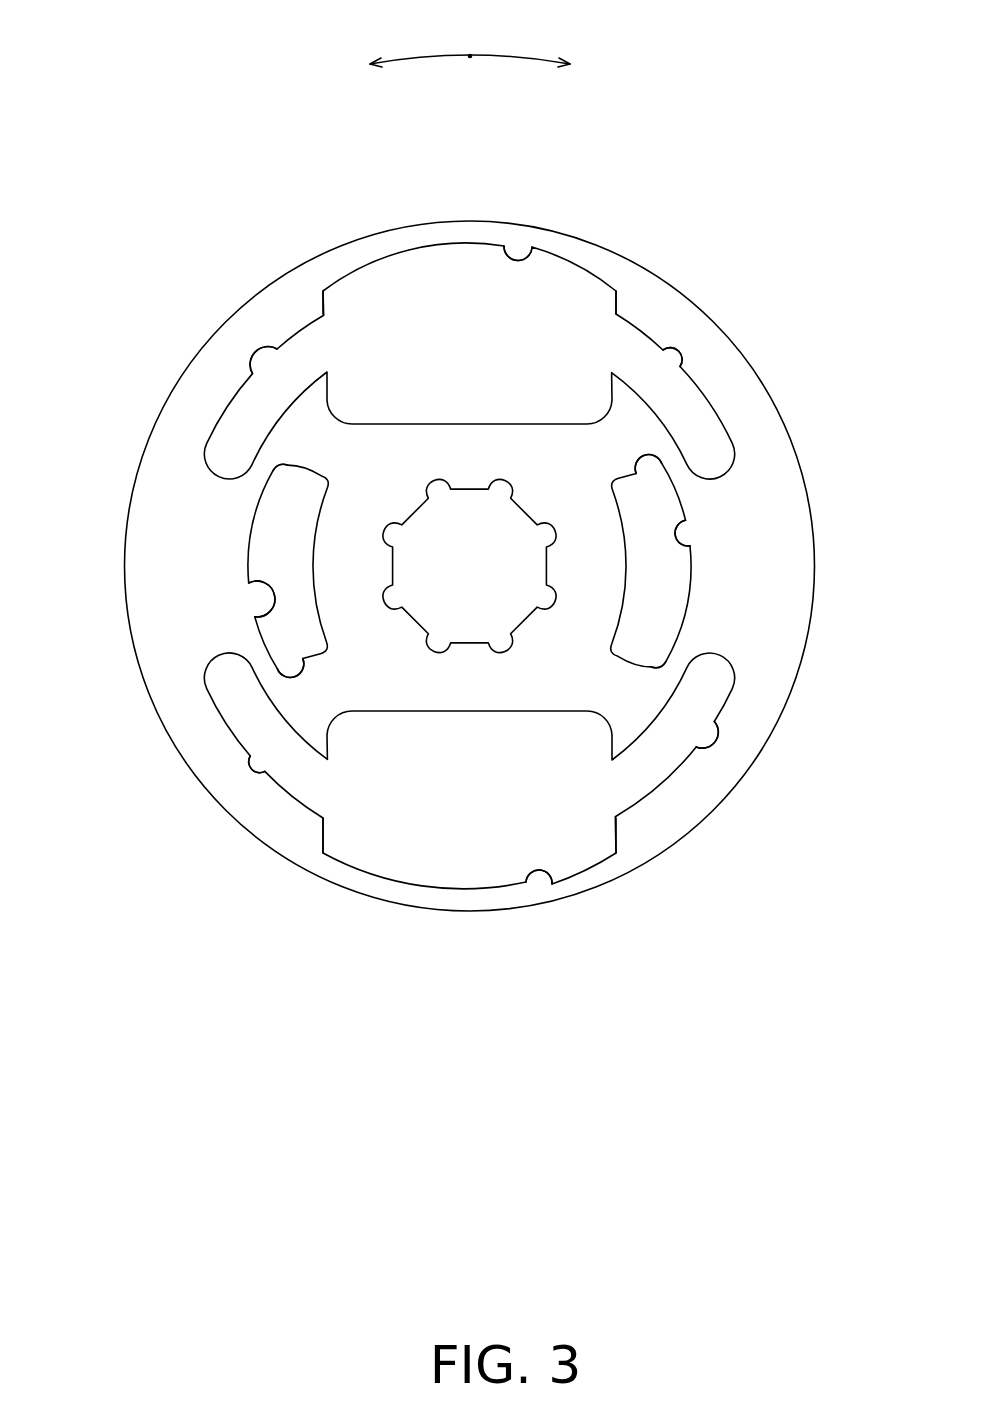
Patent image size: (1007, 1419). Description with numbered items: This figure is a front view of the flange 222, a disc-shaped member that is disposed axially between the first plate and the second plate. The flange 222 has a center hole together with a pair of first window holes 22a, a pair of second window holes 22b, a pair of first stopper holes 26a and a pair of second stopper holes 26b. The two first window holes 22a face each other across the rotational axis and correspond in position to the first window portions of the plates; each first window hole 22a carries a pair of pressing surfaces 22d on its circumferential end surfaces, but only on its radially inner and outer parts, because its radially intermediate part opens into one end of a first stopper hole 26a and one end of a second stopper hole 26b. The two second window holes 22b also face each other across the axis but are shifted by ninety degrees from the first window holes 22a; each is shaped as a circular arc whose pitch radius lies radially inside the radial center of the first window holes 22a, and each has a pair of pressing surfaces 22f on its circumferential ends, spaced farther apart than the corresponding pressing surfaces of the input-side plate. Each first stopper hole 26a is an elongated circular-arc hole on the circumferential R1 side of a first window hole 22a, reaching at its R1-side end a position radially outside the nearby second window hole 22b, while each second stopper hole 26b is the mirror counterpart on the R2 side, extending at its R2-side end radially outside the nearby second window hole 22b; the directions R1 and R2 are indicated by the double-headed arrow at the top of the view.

The flange 222 is at (152, 607).
The first window hole 22a is at (520, 260).
The second window hole 22b is at (690, 547).
The pressing surface 22d is at (323, 292).
The pressing surface 22f is at (688, 473).
The first stopper hole 26a is at (250, 373).
The second stopper hole 26b is at (677, 373).
The R1 side R1 is at (415, 31).
The R2 side R2 is at (525, 31).